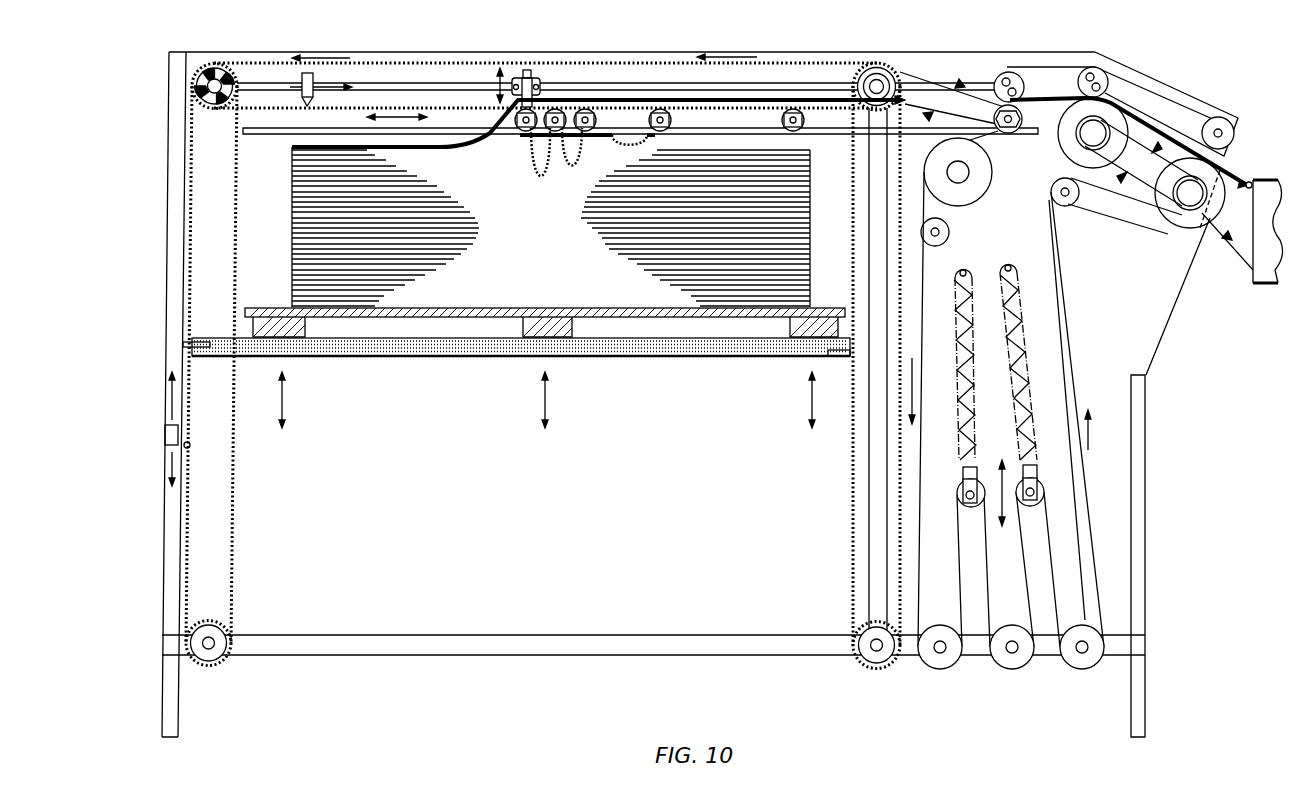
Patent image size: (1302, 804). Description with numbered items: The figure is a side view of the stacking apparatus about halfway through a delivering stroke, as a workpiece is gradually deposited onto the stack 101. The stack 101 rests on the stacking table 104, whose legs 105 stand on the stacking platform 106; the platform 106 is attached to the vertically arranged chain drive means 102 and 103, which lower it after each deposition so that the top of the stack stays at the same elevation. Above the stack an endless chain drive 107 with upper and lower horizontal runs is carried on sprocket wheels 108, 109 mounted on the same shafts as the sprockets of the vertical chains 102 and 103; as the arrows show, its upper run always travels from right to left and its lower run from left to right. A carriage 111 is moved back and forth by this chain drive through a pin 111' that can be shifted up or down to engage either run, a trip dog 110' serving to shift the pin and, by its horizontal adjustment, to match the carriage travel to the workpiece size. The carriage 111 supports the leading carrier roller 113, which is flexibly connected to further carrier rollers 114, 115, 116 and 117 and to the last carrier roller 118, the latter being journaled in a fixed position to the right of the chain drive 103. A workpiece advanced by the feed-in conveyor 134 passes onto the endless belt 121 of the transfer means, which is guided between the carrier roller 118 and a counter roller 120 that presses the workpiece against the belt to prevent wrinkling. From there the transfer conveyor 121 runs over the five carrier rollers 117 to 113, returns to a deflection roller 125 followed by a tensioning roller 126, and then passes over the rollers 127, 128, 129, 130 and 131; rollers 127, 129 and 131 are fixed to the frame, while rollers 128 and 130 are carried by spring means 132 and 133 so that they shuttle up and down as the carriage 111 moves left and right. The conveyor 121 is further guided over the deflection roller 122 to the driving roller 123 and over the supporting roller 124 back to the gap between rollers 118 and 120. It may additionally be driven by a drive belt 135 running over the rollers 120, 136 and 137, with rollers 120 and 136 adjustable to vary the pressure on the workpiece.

The stack 101 is at (295, 262).
The chain drive means 102 is at (234, 549).
The chain drive means 103 is at (852, 550).
The stacking table 104 is at (823, 308).
The legs 105 is at (790, 326).
The stacking platform 106 is at (482, 357).
The endless chain drive 107 is at (624, 62).
The sprocket wheel 108 is at (217, 72).
The sprocket wheel 109 is at (873, 64).
The trip dog 110' is at (349, 62).
The carriage 111 is at (554, 62).
The pin 111' is at (504, 48).
The leading carrier roller 113 is at (523, 132).
The carrier roller 114 is at (562, 142).
The carrier roller 115 is at (592, 142).
The carrier roller 116 is at (664, 110).
The carrier roller 117 is at (806, 140).
The last carrier roller 118 is at (1014, 134).
The counter roller 120 is at (1010, 72).
The transfer conveyor 121 is at (1133, 215).
The deflection roller 122 is at (1065, 208).
The driving roller 123 is at (1192, 232).
The supporting roller 124 is at (1115, 115).
The deflection roller 125 is at (988, 185).
The tensioning roller 126 is at (950, 232).
The roller 127 is at (940, 668).
The roller 128 is at (963, 490).
The roller 129 is at (1011, 668).
The roller 130 is at (1033, 490).
The roller 131 is at (1082, 668).
The spring means 132 is at (961, 420).
The spring means 133 is at (1022, 384).
The feed-in conveyor 134 is at (1259, 285).
The drive belt 135 is at (1058, 56).
The roller 136 is at (1104, 74).
The roller 137 is at (1219, 117).